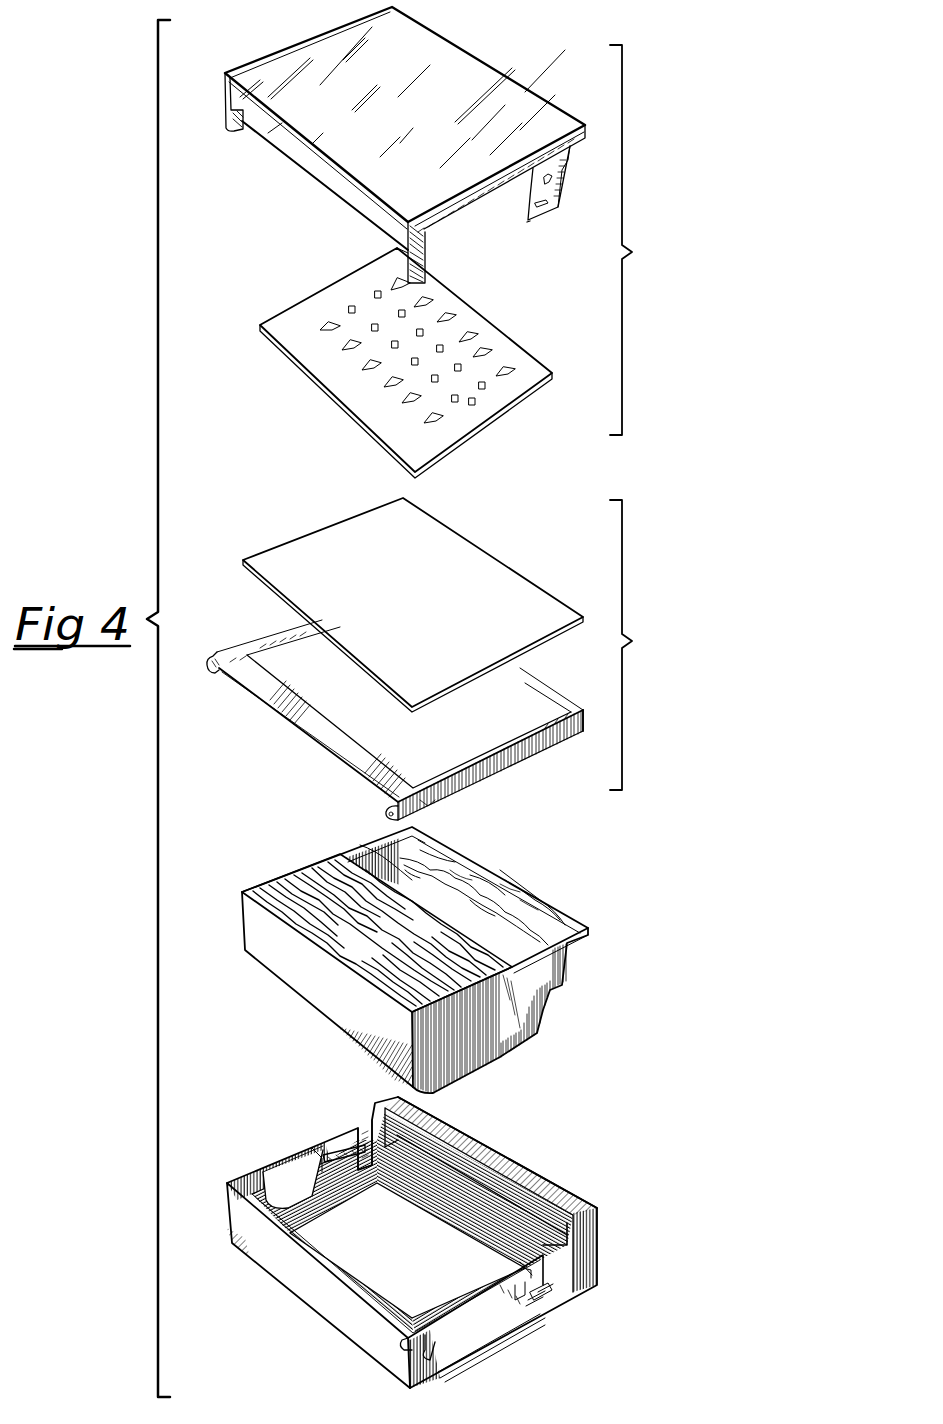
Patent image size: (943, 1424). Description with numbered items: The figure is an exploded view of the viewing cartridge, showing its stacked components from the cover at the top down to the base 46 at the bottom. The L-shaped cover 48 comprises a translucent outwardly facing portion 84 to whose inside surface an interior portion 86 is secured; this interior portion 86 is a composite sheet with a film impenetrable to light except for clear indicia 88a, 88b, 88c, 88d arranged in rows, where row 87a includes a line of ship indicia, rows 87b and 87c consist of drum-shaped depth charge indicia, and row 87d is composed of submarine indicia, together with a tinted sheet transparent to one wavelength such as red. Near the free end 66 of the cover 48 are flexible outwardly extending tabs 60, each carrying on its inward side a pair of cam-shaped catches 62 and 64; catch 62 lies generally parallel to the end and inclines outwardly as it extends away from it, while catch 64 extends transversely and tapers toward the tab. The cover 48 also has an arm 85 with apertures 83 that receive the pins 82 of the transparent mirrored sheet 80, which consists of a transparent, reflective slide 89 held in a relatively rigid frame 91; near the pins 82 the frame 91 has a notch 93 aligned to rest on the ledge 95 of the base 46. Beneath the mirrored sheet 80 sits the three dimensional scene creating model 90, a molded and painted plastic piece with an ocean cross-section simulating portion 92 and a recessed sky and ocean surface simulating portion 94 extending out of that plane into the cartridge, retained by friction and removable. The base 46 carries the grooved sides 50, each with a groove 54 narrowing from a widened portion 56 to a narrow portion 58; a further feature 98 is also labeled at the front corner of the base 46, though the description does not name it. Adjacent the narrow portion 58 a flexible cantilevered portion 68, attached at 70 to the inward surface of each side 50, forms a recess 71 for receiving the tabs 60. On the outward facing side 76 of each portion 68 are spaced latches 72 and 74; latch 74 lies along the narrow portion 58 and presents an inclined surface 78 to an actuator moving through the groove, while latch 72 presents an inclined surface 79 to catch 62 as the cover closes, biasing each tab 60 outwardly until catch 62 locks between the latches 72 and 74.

The base 46 is at (315, 1283).
The L-shaped cover 48 is at (641, 240).
The grooved sides 50 is at (599, 1226).
The groove 54 is at (427, 1380).
The widened portion 56 is at (405, 1366).
The narrow portion 58 is at (482, 1352).
The flexible outwardly extending tab 60 is at (566, 152).
The cam-shaped catch 62 is at (548, 208).
The cam-shaped catch 64 is at (556, 183).
The free end 66 is at (525, 218).
The flexible cantilevered portion 68 is at (356, 1140).
The attachment point 70 is at (338, 1146).
The recess 71 is at (320, 1150).
The latch 72 is at (545, 1300).
The latch 74 is at (540, 1302).
The outward facing side 76 is at (530, 1275).
The inclined surface 78 is at (532, 1308).
The inclined surface 79 is at (550, 1290).
The transparent mirrored sheet 80 is at (636, 645).
The pins 82 is at (212, 654).
The apertures 83 is at (423, 238).
The translucent outwardly facing portion 84 is at (470, 78).
The arm 85 is at (423, 266).
The interior portion 86 is at (338, 383).
The row of indicia 87a is at (388, 276).
The row of indicia 87b is at (372, 296).
The row of indicia 87c is at (345, 310).
The row of indicia 87d is at (318, 318).
The clear indicia 88a is at (465, 332).
The clear indicia 88b is at (462, 366).
The clear indicia 88c is at (457, 402).
The clear indicia 88d is at (440, 428).
The slide 89 is at (490, 566).
The three dimensional scene creating model 90 is at (568, 963).
The frame 91 is at (538, 738).
The ocean cross-section simulating portion 92 is at (307, 868).
The notch 93 is at (430, 808).
The recessed sky and ocean surface simulating portion 94 is at (480, 890).
The ledge 95 is at (262, 1215).
The flange 98 is at (436, 1352).